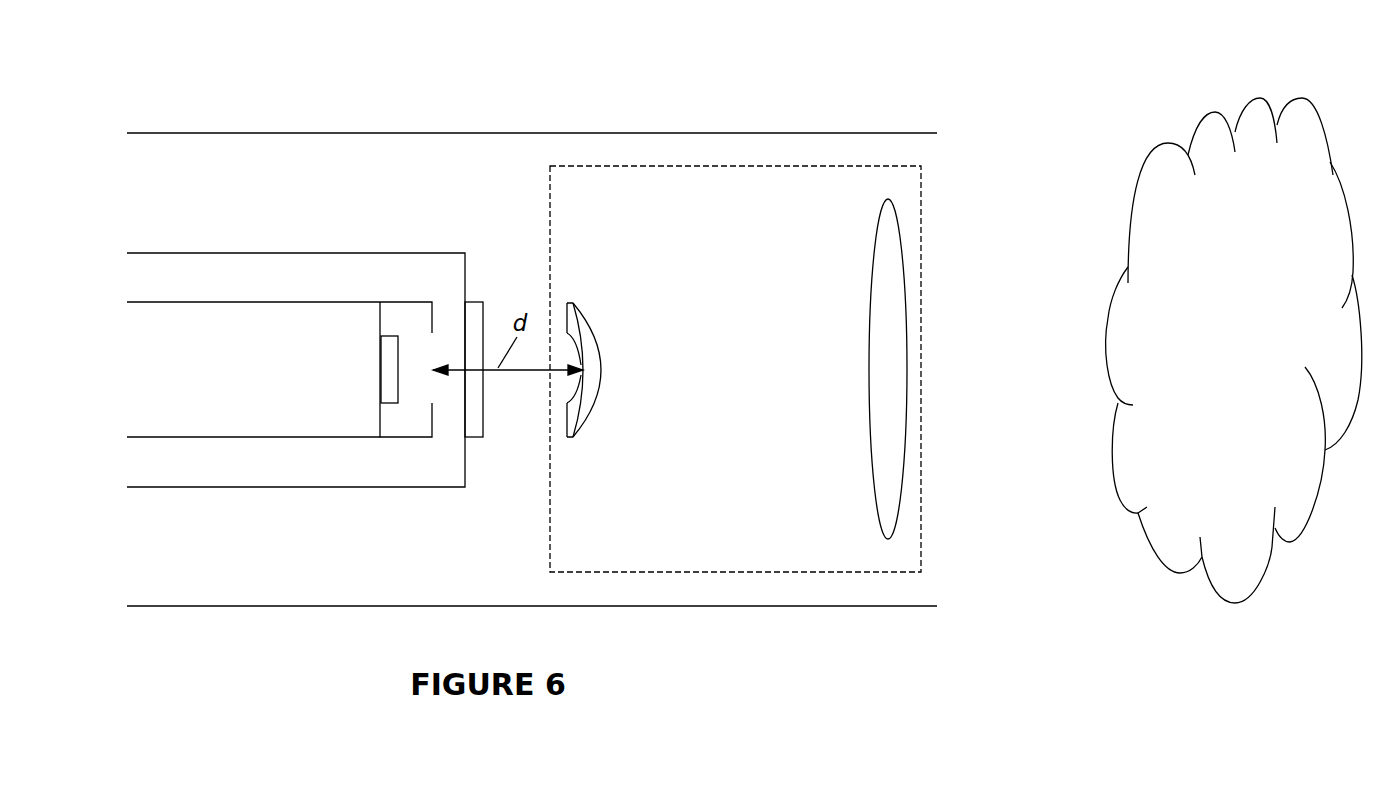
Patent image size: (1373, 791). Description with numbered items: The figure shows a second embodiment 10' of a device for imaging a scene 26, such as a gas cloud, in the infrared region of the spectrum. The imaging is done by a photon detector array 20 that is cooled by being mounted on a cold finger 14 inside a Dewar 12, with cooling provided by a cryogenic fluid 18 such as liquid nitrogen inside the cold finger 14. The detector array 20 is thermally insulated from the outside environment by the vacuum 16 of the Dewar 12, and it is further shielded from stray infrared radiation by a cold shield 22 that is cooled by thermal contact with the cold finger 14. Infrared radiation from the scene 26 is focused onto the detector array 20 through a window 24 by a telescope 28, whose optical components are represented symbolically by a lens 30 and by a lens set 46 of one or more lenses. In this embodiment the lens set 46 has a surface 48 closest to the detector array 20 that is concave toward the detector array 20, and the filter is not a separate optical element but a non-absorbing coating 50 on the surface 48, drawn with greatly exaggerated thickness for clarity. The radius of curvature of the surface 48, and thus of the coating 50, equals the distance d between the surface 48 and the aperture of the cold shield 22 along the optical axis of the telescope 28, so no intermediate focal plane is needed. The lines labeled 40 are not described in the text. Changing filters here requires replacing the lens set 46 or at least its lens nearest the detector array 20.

The second embodiment of device 10' is at (953, 60).
The Dewar 12 is at (281, 253).
The cold finger 14 is at (347, 302).
The vacuum 16 is at (193, 285).
The cryogenic fluid 18 is at (159, 369).
The photon detector array 20 is at (378, 386).
The cold shield 22 is at (398, 438).
The window 24 is at (483, 427).
The scene 26 is at (1205, 315).
The telescope 28 is at (770, 572).
The lens 30 is at (887, 283).
The beam path boundary 40 is at (280, 133).
The lens set 46 is at (600, 404).
The surface 48 is at (583, 351).
The non-absorbing coating 50 is at (567, 317).